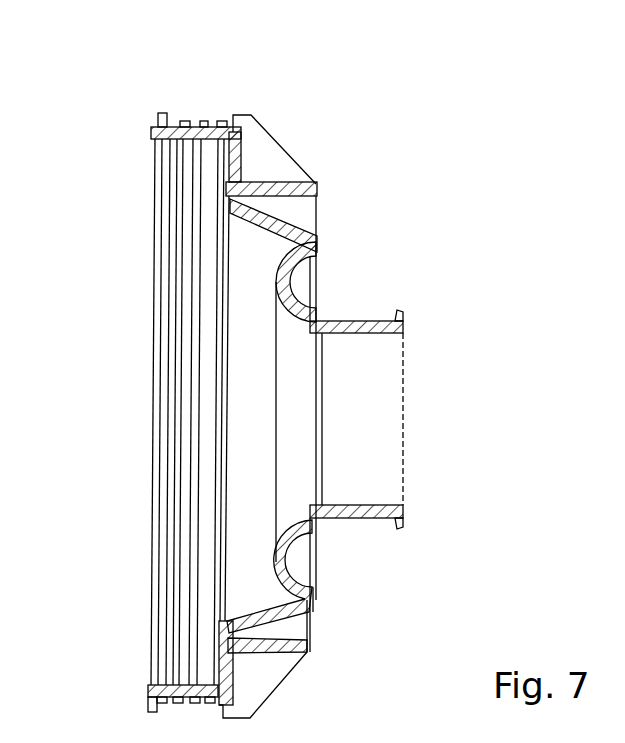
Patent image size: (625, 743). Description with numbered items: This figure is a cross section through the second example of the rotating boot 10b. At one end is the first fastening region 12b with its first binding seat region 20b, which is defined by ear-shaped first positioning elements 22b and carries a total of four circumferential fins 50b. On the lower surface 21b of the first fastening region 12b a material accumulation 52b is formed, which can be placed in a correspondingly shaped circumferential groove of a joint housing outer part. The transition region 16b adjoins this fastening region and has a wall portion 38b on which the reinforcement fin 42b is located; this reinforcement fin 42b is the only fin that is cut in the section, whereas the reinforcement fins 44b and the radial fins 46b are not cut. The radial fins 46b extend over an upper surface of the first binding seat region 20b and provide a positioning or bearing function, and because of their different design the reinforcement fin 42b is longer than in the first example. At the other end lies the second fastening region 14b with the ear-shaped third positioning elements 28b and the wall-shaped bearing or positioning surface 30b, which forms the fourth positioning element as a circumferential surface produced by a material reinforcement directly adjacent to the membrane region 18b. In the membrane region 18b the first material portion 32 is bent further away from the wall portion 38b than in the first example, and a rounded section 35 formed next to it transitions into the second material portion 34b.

The rotating boot 10b is at (488, 168).
The first fastening region 12b is at (196, 94).
The second fastening region 14b is at (369, 558).
The transition region 16b is at (400, 118).
The membrane region 18b is at (354, 271).
The first binding seat region 20b is at (214, 108).
The lower surface 21b is at (152, 157).
The first positioning elements 22b is at (150, 712).
The third positioning elements 28b is at (399, 529).
The fourth positioning element 30b is at (330, 319).
The support web 32 is at (296, 622).
The second material portion 34b is at (294, 560).
The wall edge 35 is at (276, 566).
The wall portion 38b is at (230, 166).
The reinforcement fin 42b is at (317, 185).
The reinforcement fins 44b is at (316, 216).
The radial fins 46b is at (280, 158).
The circumferential fins 50b is at (176, 124).
The material accumulation 52b is at (225, 142).